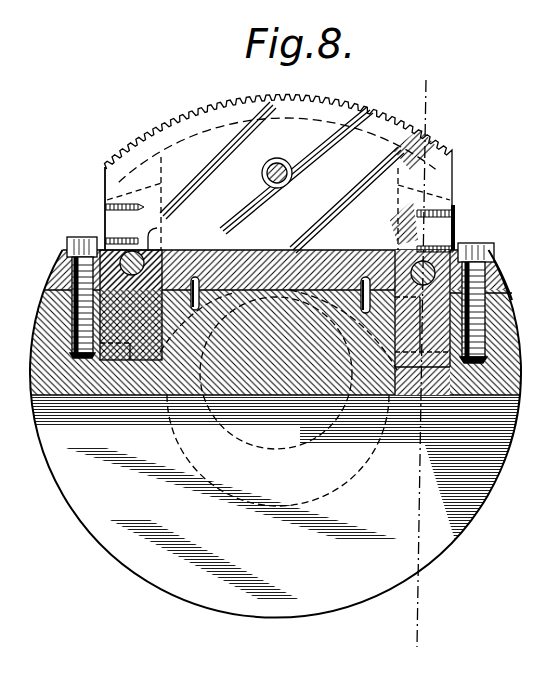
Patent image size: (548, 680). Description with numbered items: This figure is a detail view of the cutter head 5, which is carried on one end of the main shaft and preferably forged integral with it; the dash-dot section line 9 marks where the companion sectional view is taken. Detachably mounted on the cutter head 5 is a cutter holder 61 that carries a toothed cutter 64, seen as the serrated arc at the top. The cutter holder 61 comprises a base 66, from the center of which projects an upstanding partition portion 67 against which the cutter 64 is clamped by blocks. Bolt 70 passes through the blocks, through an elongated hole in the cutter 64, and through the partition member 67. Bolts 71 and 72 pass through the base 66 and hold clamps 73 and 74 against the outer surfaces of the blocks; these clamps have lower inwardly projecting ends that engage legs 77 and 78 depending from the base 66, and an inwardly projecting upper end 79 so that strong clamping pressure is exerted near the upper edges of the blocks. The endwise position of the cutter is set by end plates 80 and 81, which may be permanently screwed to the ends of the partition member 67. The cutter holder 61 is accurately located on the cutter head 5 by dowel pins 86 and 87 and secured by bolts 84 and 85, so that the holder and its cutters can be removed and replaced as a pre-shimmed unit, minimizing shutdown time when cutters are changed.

The cutter head 5 is at (143, 570).
The section line 9- 9 is at (404, 77).
The cutter holder 61 is at (508, 272).
The toothed cutter 64 is at (199, 112).
The base 66 is at (257, 260).
The partition portion 67 is at (306, 120).
The bolt 70 is at (262, 176).
The bolt 71 is at (157, 228).
The bolt 72 is at (413, 263).
The clamp 73 is at (152, 203).
The clamp 74 is at (398, 213).
The leg 77 is at (132, 340).
The leg 78 is at (410, 367).
The inwardly projecting upper end 79 is at (397, 172).
The end plate 80 is at (106, 216).
The end plate 81 is at (458, 228).
The bolt 84 is at (67, 245).
The bolt 85 is at (476, 247).
The dowel pin 86 is at (221, 255).
The dowel pin 87 is at (354, 277).